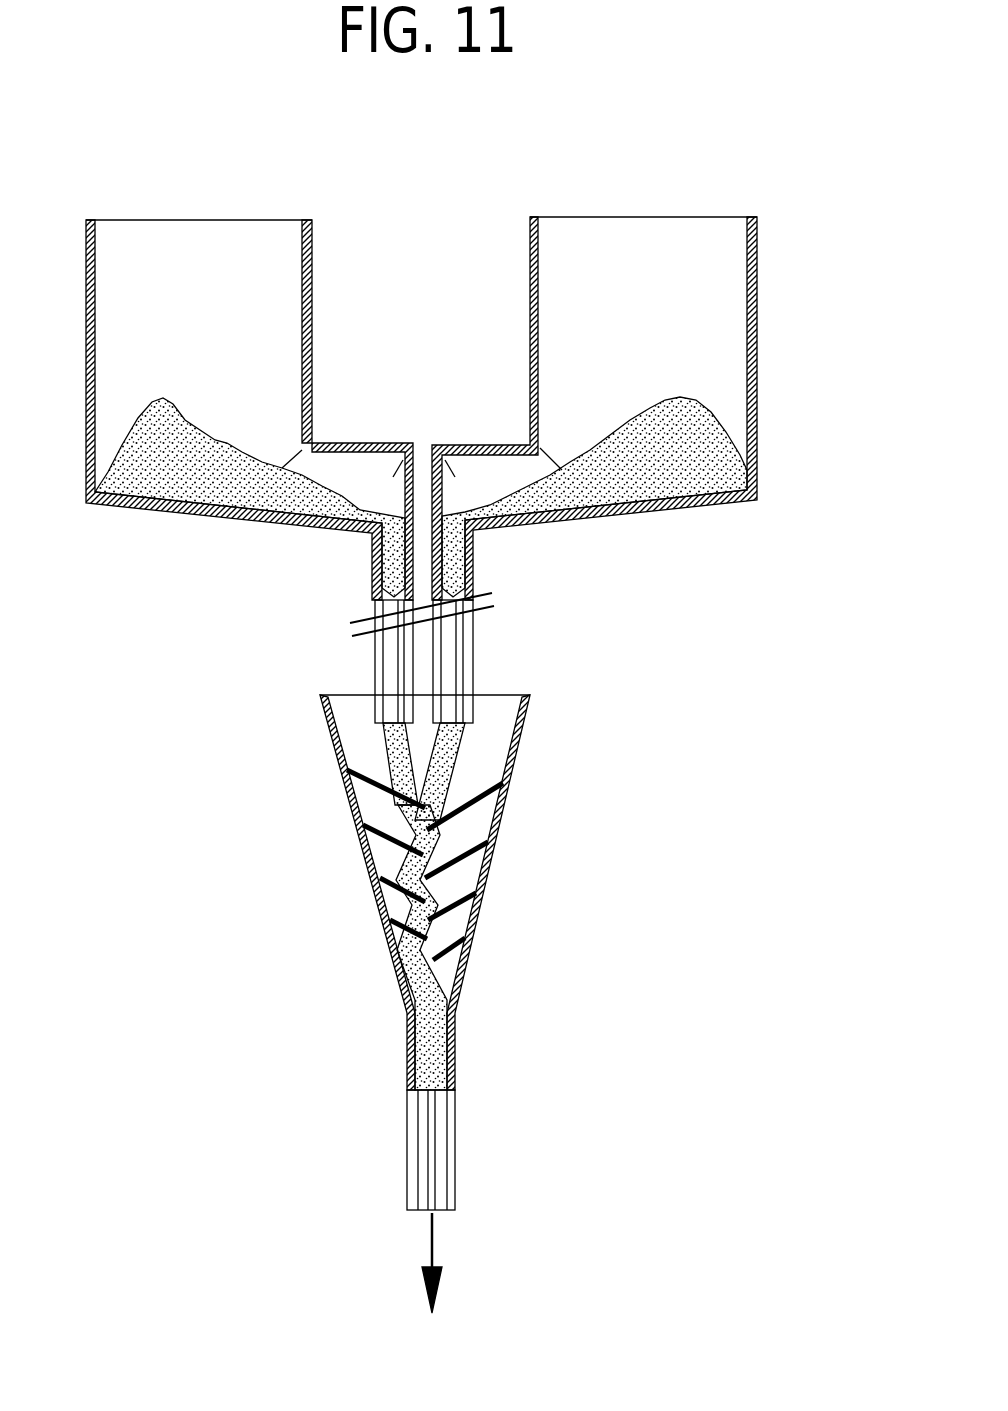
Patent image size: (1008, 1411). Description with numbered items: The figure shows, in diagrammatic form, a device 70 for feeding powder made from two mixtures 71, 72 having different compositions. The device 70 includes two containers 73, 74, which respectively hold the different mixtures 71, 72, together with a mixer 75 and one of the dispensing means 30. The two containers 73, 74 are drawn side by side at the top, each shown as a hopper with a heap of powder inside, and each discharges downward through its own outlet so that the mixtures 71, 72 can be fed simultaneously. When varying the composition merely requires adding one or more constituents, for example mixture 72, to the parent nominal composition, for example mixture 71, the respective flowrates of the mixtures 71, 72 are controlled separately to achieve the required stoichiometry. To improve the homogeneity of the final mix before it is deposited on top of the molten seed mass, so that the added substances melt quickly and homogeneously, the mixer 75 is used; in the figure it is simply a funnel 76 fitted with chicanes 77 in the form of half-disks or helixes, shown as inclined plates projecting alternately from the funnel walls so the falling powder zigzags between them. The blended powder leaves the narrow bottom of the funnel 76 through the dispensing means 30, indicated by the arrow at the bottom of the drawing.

The device 70 is at (778, 266).
The container 73 is at (210, 247).
The container 74 is at (643, 248).
The mixture 71 is at (190, 433).
The mixture 72 is at (640, 433).
The funnel 76 is at (352, 730).
The mixer 75 is at (540, 760).
The chicanes 77 is at (462, 812).
The dispensing means 30 is at (437, 1155).